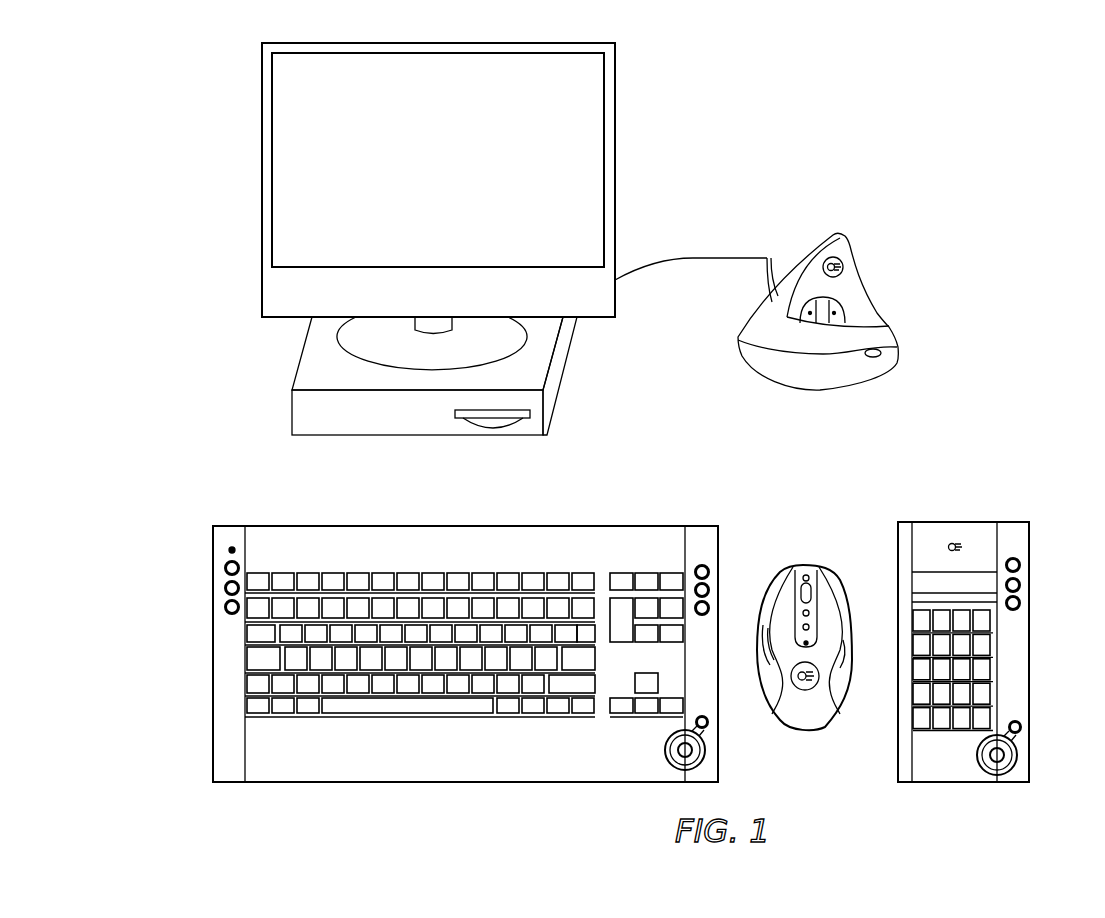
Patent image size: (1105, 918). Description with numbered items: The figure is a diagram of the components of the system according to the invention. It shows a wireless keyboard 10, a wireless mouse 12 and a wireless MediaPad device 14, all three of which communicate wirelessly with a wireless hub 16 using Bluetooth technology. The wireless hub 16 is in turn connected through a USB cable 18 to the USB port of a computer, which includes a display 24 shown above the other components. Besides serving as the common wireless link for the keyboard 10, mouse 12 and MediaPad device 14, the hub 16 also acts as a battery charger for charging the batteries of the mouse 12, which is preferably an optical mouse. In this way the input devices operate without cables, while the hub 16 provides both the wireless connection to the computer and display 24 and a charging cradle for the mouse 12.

The wireless keyboard 10 is at (442, 624).
The wireless mouse 12 is at (804, 623).
The wireless MediaPad device 14 is at (988, 626).
The wireless hub 16 is at (857, 311).
The USB cable 18 is at (696, 248).
The display 24 is at (489, 239).